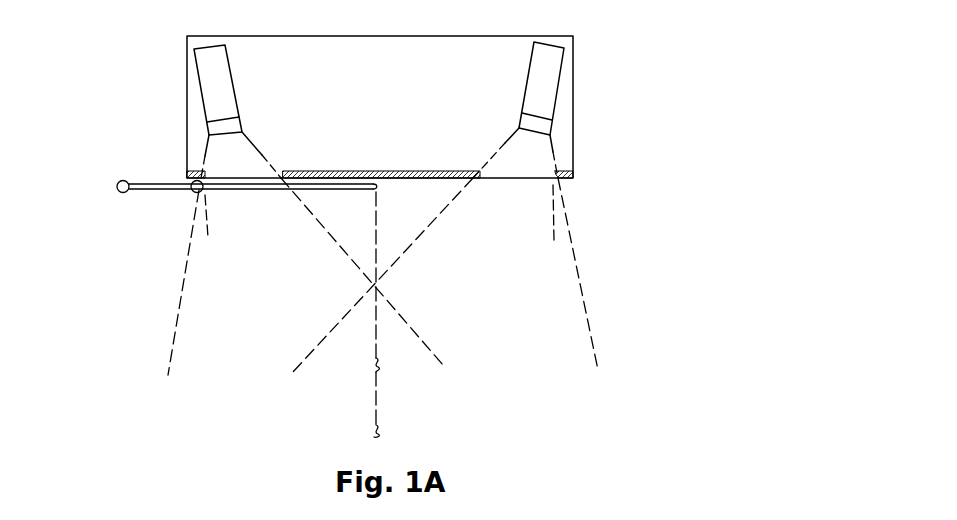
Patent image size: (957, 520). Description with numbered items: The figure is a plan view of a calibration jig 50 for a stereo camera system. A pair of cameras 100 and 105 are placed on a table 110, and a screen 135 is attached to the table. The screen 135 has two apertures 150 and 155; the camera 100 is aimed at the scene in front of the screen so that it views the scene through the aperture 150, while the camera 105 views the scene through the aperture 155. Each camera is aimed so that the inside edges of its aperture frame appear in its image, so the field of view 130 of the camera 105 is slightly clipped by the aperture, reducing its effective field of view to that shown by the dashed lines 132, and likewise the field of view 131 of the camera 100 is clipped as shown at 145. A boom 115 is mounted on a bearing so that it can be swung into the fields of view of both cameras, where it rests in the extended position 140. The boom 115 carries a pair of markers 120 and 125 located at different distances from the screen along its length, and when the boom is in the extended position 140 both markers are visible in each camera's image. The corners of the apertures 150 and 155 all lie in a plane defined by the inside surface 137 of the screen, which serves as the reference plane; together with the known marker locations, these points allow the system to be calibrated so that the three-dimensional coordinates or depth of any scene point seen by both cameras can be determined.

The imaging system 50 is at (621, 108).
The camera 100 is at (560, 72).
The camera 105 is at (203, 95).
The table 110 is at (388, 103).
The boom 115 is at (163, 190).
The marker 120 is at (122, 180).
The marker 125 is at (195, 196).
The field of view 130 is at (187, 259).
The field of view 131 is at (585, 315).
The effective field of view 132 is at (302, 222).
The screen 135 is at (575, 176).
The inside surface 137 is at (340, 172).
The extended position 140 is at (378, 410).
The effective field of view 145 is at (458, 202).
The aperture 150 is at (512, 207).
The aperture 155 is at (234, 212).